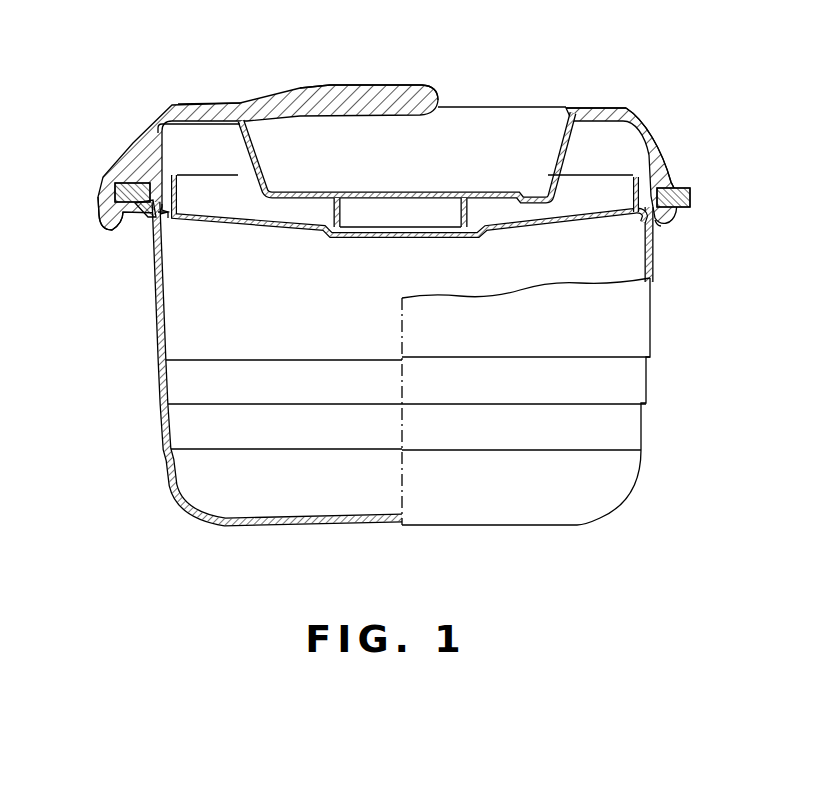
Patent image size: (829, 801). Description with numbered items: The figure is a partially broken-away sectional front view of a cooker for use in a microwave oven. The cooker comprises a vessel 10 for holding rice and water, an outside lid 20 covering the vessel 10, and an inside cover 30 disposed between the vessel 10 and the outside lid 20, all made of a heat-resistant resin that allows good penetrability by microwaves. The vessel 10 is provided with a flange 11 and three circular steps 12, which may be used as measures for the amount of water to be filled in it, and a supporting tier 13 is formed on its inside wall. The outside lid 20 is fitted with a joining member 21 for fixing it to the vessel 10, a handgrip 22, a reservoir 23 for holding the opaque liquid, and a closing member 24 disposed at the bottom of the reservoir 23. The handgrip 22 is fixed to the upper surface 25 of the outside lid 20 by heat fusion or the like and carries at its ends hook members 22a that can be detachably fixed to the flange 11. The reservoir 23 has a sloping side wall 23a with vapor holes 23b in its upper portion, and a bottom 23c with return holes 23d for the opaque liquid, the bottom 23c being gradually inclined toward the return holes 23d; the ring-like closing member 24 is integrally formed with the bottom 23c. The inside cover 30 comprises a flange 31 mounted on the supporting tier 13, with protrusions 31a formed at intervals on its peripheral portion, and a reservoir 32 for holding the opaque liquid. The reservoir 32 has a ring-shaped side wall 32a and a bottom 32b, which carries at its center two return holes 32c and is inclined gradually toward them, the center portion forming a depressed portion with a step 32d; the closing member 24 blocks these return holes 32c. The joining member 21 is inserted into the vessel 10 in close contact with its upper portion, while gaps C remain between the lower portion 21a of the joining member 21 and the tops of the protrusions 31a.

The vessel 10 is at (652, 320).
The flange 11 is at (690, 198).
The circular steps 12 is at (300, 360).
The supporting tier 13 is at (165, 216).
The outside lid 20 is at (634, 108).
The joining member 21 is at (672, 168).
The lower portion of the joining member 21a is at (164, 205).
The handgrip 22 is at (343, 88).
The hook members 22a is at (100, 228).
The reservoir 23 is at (452, 118).
The sloping side wall 23a is at (256, 143).
The vapor holes 23b is at (566, 124).
The bottom 23c is at (405, 190).
The return holes 23d is at (527, 198).
The closing member 24 is at (350, 205).
The upper surface 25 is at (200, 103).
The inside cover 30 is at (298, 238).
The flange 31 is at (638, 218).
The protrusions 31a is at (143, 216).
The reservoir 32 is at (527, 217).
The ring-shaped side wall 32a is at (178, 192).
The bottom 32b is at (505, 235).
The return holes 32c is at (425, 243).
The step 32d is at (327, 236).
The gaps C is at (661, 225).